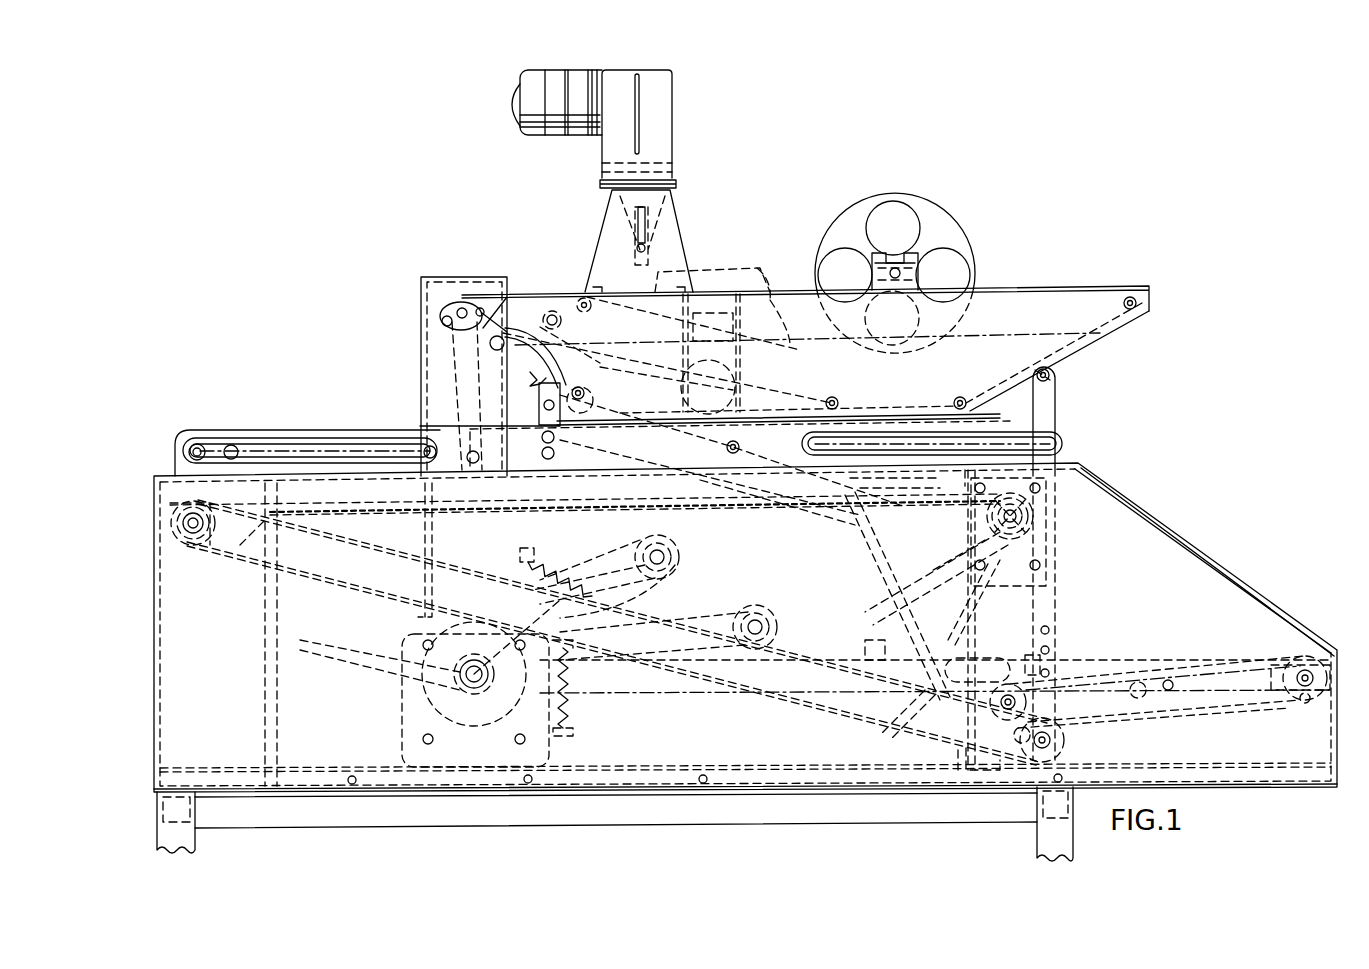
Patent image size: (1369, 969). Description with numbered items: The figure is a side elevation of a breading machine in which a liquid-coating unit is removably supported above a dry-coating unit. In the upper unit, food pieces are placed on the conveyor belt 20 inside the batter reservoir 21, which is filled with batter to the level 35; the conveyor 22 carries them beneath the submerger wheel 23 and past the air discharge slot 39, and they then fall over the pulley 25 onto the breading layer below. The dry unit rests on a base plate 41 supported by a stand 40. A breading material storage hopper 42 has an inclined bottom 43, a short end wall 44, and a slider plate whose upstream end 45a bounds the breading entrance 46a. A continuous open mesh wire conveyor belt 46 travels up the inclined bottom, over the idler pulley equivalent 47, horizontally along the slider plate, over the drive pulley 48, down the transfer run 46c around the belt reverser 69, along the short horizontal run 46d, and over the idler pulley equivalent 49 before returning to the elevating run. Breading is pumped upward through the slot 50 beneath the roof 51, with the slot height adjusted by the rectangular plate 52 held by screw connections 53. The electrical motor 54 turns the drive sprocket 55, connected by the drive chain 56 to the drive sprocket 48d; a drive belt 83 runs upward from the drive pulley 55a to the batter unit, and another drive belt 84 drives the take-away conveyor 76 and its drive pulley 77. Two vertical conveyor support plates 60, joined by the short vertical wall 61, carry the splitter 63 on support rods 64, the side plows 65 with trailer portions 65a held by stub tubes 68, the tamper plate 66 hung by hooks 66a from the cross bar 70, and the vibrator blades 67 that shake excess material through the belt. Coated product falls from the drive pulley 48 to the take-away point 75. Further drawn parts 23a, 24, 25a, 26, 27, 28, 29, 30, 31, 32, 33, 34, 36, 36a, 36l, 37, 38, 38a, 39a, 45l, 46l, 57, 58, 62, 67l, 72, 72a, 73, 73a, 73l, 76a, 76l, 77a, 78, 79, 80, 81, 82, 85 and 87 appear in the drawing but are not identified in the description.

The conveyor belt 20 is at (1068, 292).
The batter reservoir 21 is at (889, 382).
The conveyor 22 is at (1138, 303).
The submerger wheel 23 is at (947, 205).
The flywheel openings 23a is at (955, 230).
The bolt 24 is at (581, 298).
The pulley 25 is at (468, 300).
The clamp pin 25a is at (445, 316).
The bracket arm 26 is at (503, 333).
The bearing 27 is at (594, 398).
The rod 28 is at (570, 325).
The bolt 29 is at (548, 312).
The bolt 30 is at (840, 400).
The bolt 31 is at (960, 397).
The side plate 32 is at (1015, 298).
The hub 33 is at (920, 273).
The hub cap 34 is at (920, 260).
The batter level 35 is at (778, 296).
The chute 36 is at (715, 268).
The chute opening 36a is at (690, 324).
The chute outlet 36l is at (742, 356).
The chute bracket 37 is at (758, 290).
The motor 38 is at (581, 147).
The motor mount 38a is at (680, 245).
The air discharge slot 39 is at (650, 285).
The mount opening 39a is at (625, 232).
The stand 40 is at (1040, 840).
The base plate 41 is at (710, 768).
The breading material storage hopper 42 is at (776, 584).
The inclined bottom 43 is at (672, 695).
The short end wall 44 is at (160, 482).
The upstream end of slider plate 45a is at (345, 520).
The link 45l is at (862, 512).
The open mesh wire conveyor belt 46 is at (615, 500).
The breading entrance 46a is at (230, 505).
The transfer run 46c is at (1048, 545).
The short horizontal run 46d is at (957, 752).
The frame member 46l is at (960, 480).
The idler pulley equivalent 47 is at (193, 545).
The drive pulley 48 is at (1035, 512).
The drive sprocket 48d is at (1035, 522).
The idler pulley equivalent 49 is at (1065, 725).
The slot 50 is at (364, 577).
The roof 51 is at (345, 540).
The rectangular plate 52 is at (560, 562).
The screw connections 53 is at (556, 550).
The electrical motor 54 is at (405, 695).
The drive sprocket 55 is at (443, 684).
The drive pulley 55a is at (420, 732).
The drive chain 56 is at (685, 540).
The bearing 57 is at (676, 572).
The link 58 is at (605, 606).
The vertical conveyor support plates 60 is at (340, 430).
The short vertical wall 61 is at (840, 530).
The sprocket 62 is at (1066, 746).
The splitter 63 is at (270, 440).
The support rods 64 is at (200, 444).
The side plows 65 is at (484, 440).
The trailer portion 65a is at (880, 480).
The tamper plate 66 is at (655, 450).
The hooks 66a is at (542, 453).
The vibrator blades 67 is at (532, 378).
The rod 67l is at (878, 535).
The stub tube 68 is at (742, 450).
The belt reverser 69 is at (968, 625).
The cross bar 70 is at (1052, 372).
The link 72 is at (925, 700).
The slot 72a is at (978, 658).
The link 73 is at (900, 606).
The pivot 73a is at (872, 640).
The link 73l is at (915, 568).
The take-away point 75 is at (1058, 635).
The take-away conveyor 76 is at (1191, 668).
The upper belt run 76a is at (1225, 656).
The lower belt run 76l is at (1175, 705).
The drive pulley 77 is at (1310, 640).
The roller 77a is at (1268, 682).
The bracket 78 is at (1060, 660).
The pulley 79 is at (1240, 660).
The bearing 80 is at (1130, 682).
The bearing 81 is at (1005, 710).
The pin 82 is at (1165, 680).
The drive belt 83 is at (445, 387).
The drive belt 84 is at (620, 700).
The bracket 85 is at (1058, 400).
The bolt 87 is at (1052, 378).